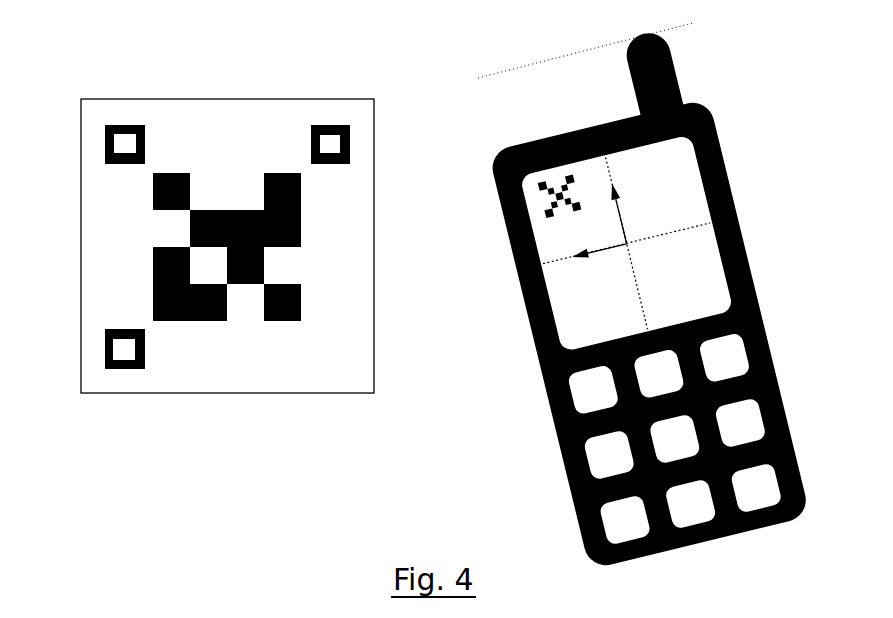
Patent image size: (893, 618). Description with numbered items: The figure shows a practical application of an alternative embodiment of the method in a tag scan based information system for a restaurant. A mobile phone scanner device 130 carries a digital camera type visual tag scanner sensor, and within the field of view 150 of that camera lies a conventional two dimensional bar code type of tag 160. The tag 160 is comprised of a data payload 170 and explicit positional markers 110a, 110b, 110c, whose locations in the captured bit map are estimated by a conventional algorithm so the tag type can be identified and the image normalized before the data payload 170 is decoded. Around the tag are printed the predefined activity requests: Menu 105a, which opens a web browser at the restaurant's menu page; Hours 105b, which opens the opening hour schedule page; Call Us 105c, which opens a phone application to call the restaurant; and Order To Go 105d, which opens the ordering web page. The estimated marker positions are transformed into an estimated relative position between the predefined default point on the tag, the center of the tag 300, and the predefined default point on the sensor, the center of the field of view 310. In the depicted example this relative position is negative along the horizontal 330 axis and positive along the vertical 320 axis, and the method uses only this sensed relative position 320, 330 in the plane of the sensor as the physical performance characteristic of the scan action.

The Menu activity request 105a is at (105, 107).
The Hours activity request 105b is at (343, 105).
The Call Us activity request 105c is at (118, 390).
The Order To Go activity request 105d is at (315, 383).
The explicit positional marker 110a is at (145, 139).
The explicit positional marker 110b is at (311, 144).
The explicit positional marker 110c is at (145, 349).
The two dimensional bar code tag 160 is at (355, 287).
The data payload 170 is at (303, 237).
The center of the tag 300 is at (227, 247).
The mobile phone scanner device 130 is at (717, 123).
The field of view 150 is at (550, 212).
The center of the field of view 310 is at (627, 242).
The vertical axis 320 is at (618, 214).
The horizontal axis 330 is at (615, 252).